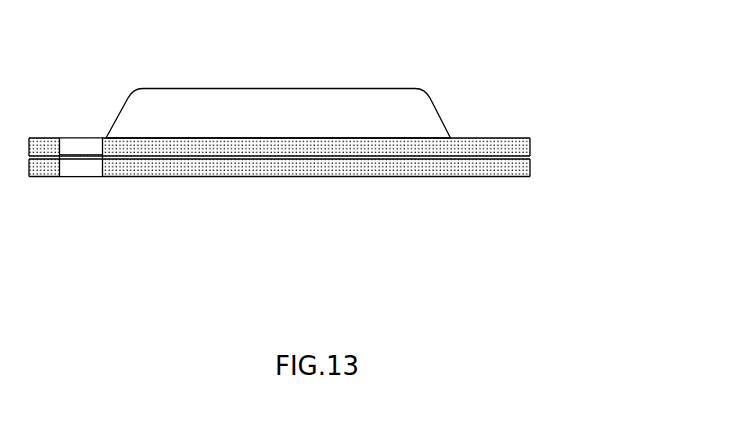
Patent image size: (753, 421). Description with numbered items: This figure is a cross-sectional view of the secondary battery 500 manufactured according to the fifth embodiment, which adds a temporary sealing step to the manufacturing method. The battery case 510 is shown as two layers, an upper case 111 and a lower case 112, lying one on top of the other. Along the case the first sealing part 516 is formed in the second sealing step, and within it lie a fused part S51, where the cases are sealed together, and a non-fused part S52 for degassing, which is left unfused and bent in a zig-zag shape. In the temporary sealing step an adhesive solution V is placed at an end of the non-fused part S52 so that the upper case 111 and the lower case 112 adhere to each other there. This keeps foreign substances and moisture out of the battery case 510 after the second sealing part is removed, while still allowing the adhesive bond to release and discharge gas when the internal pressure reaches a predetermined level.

The secondary battery 500 is at (361, 112).
The battery case 510 is at (361, 146).
The upper case 111 is at (548, 142).
The lower case 112 is at (548, 169).
The non-fused part for degassing S52 is at (80, 136).
The adhesive solution V is at (80, 159).
The first sealing part 516 is at (378, 150).
The fused part S51 is at (240, 130).